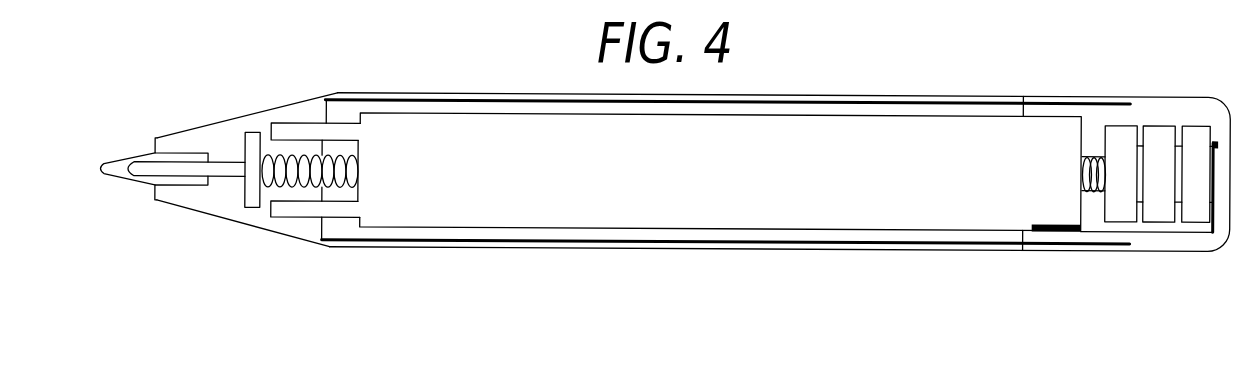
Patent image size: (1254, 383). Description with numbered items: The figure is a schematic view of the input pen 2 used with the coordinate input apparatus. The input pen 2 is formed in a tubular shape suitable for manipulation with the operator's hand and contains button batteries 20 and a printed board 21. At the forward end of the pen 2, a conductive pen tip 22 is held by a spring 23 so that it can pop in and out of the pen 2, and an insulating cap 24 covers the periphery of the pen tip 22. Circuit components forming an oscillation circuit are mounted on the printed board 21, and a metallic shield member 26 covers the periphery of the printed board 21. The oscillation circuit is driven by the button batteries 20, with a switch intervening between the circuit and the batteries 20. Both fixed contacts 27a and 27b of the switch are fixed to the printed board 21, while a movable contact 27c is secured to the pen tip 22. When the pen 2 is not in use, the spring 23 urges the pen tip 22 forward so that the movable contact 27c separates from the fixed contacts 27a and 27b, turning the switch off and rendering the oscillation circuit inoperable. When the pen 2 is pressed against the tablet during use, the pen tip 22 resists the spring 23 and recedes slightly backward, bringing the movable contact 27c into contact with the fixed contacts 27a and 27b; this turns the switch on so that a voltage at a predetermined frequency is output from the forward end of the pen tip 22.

The input pen 2 is at (659, 174).
The button batteries 20 is at (1148, 139).
The printed board 21 is at (701, 208).
The conductive pen tip 22 is at (187, 210).
The spring 23 is at (299, 217).
The insulating cap 24 is at (122, 196).
The metallic shield member 26 is at (802, 76).
The fixed contact 27a is at (311, 97).
The fixed contact 27b is at (315, 250).
The movable contact 27c is at (226, 140).